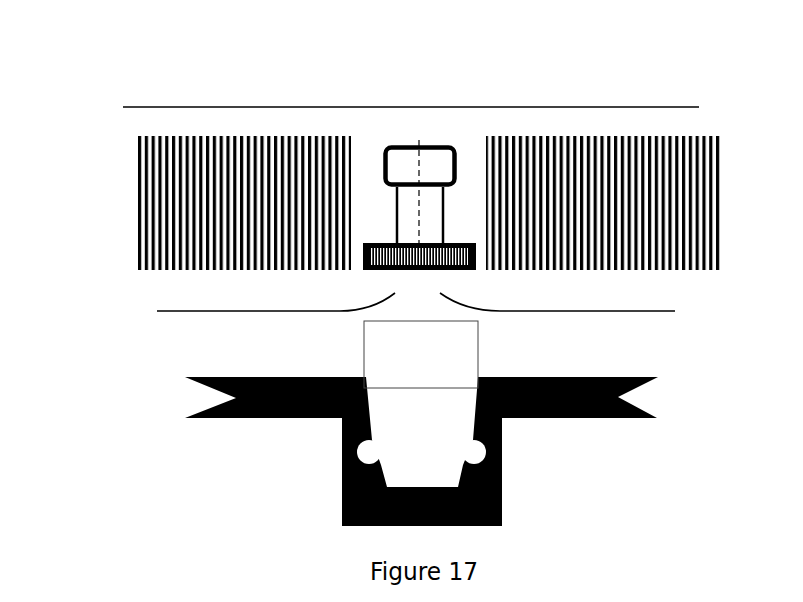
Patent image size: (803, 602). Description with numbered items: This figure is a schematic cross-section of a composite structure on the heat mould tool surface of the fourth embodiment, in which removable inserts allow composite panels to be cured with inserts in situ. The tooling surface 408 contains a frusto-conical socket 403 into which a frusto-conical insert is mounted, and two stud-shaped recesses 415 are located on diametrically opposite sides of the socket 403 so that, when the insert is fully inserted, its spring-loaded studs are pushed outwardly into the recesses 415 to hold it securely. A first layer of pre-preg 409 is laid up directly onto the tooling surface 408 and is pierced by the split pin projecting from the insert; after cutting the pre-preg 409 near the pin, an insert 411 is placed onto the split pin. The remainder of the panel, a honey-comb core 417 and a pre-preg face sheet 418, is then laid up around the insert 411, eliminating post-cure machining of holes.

The frusto-conical socket 403 is at (450, 387).
The tooling surface 408 is at (637, 408).
The first layer of pre-preg 409 is at (188, 312).
The insert 411 is at (402, 148).
The stud-shaped recesses 415 is at (375, 451).
The honey-comb core 417 is at (152, 213).
The pre-preg face sheet 418 is at (182, 107).